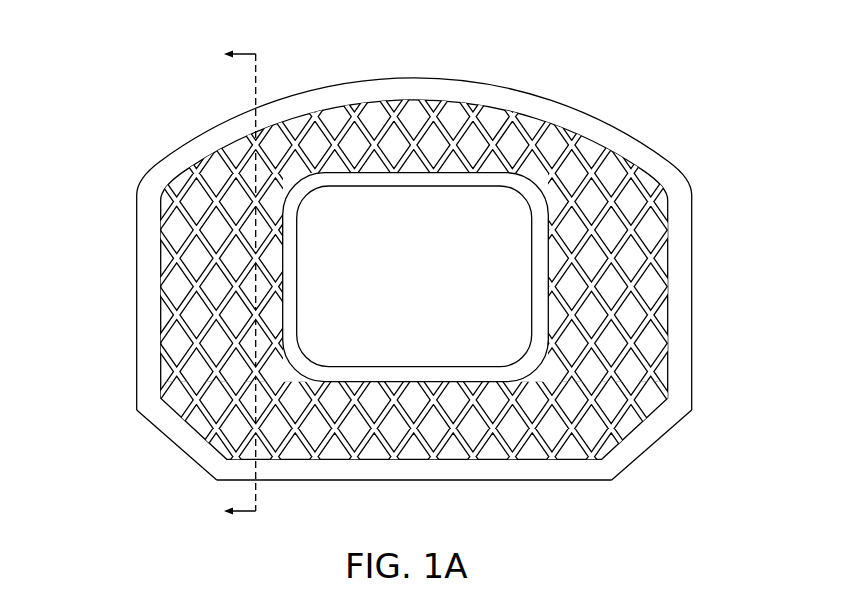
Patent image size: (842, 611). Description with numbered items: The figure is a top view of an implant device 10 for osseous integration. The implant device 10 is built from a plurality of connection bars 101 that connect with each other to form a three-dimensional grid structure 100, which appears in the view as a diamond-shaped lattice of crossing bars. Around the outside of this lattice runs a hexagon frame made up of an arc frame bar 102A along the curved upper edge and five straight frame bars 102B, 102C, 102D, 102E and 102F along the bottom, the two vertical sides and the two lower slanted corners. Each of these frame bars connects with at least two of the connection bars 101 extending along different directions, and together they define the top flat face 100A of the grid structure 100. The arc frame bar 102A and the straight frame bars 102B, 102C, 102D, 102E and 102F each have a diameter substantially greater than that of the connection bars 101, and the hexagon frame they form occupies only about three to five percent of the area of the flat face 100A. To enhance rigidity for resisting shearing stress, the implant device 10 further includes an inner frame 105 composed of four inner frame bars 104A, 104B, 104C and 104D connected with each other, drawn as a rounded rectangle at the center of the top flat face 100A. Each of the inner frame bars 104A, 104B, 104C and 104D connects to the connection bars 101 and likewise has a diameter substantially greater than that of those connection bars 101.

The implant device 10 is at (82, 28).
The 3D grid structure 100 is at (493, 73).
The top flat face 100A is at (440, 104).
The connection bars 101 is at (583, 165).
The arc frame bar 102A is at (545, 105).
The straight frame bar 102B is at (577, 472).
The straight frame bar 102C is at (148, 283).
The straight frame bar 102D is at (682, 297).
The straight frame bar 102E is at (188, 442).
The straight frame bar 102F is at (640, 442).
The inner frame bar 104A is at (393, 182).
The inner frame bar 104B is at (454, 375).
The inner frame bar 104C is at (290, 317).
The inner frame bar 104D is at (538, 257).
The inner frame 105 is at (547, 213).